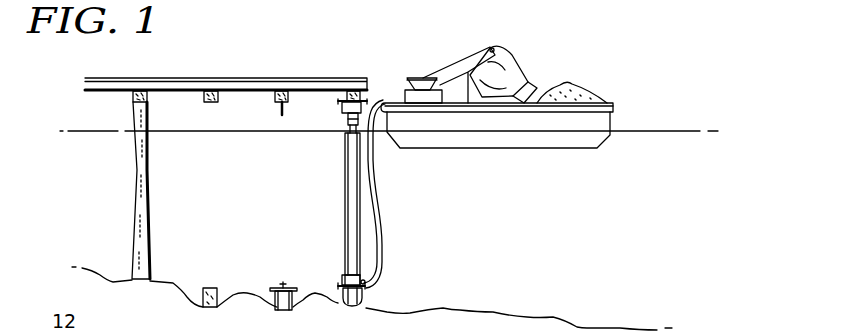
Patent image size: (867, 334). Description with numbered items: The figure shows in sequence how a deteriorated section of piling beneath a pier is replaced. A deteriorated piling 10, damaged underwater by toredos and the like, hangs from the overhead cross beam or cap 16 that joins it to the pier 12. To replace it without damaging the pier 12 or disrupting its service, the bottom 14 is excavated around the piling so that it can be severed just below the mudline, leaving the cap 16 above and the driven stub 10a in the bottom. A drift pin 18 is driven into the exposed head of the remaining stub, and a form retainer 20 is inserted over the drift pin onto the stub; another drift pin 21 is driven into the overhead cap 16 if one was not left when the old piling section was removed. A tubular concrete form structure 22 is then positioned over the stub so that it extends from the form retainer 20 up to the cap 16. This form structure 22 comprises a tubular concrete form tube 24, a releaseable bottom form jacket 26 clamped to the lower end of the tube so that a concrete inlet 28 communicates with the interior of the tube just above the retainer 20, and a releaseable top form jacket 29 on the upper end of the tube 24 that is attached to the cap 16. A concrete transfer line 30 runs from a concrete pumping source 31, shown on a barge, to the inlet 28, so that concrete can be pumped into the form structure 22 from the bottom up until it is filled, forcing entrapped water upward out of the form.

The deteriorated piling 10 is at (145, 180).
The driven stub 10a is at (208, 287).
The pier 12 is at (266, 78).
The bottom 14 is at (163, 288).
The overhead cross beam or cap 16 is at (148, 98).
The drift pin 18 is at (283, 287).
The form retainer 20 is at (297, 288).
The drift pin 21 is at (281, 113).
The tubular concrete form structure 22 is at (337, 205).
The tubular concrete form tube 24 is at (348, 167).
The releaseable bottom form jacket 26 is at (337, 291).
The concrete inlet 28 is at (366, 282).
The releaseable top form jacket 29 is at (349, 126).
The concrete transfer line 30 is at (379, 204).
The concrete pumping source 31 is at (452, 62).